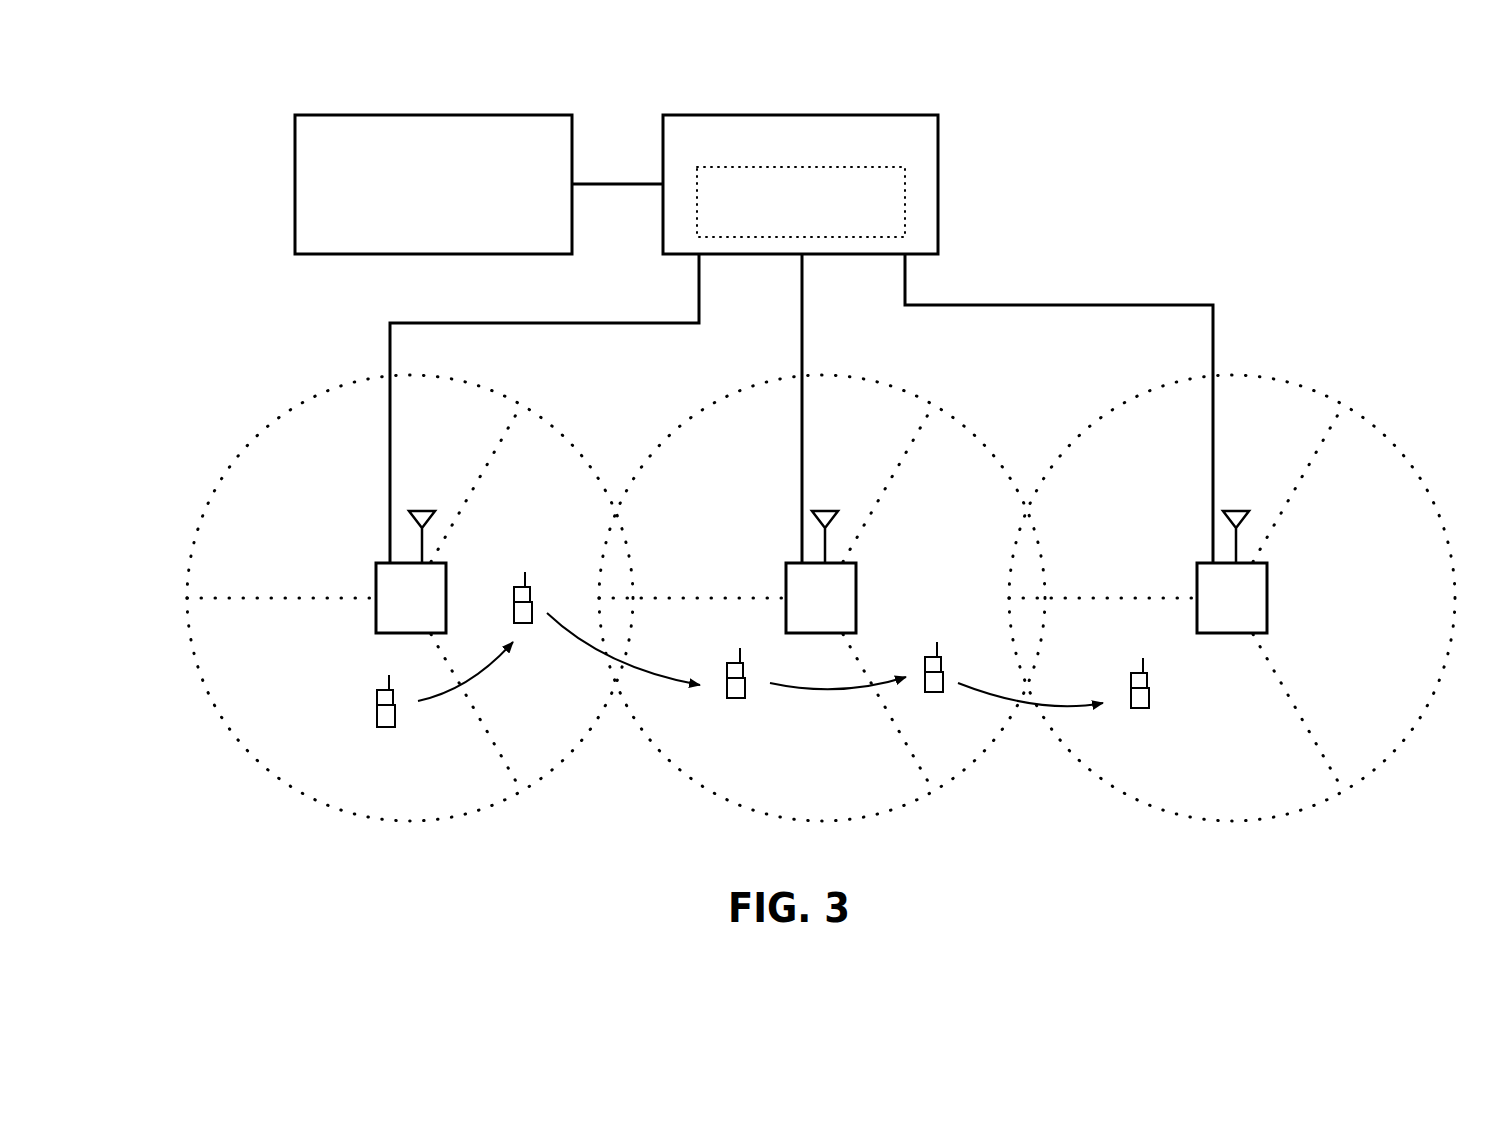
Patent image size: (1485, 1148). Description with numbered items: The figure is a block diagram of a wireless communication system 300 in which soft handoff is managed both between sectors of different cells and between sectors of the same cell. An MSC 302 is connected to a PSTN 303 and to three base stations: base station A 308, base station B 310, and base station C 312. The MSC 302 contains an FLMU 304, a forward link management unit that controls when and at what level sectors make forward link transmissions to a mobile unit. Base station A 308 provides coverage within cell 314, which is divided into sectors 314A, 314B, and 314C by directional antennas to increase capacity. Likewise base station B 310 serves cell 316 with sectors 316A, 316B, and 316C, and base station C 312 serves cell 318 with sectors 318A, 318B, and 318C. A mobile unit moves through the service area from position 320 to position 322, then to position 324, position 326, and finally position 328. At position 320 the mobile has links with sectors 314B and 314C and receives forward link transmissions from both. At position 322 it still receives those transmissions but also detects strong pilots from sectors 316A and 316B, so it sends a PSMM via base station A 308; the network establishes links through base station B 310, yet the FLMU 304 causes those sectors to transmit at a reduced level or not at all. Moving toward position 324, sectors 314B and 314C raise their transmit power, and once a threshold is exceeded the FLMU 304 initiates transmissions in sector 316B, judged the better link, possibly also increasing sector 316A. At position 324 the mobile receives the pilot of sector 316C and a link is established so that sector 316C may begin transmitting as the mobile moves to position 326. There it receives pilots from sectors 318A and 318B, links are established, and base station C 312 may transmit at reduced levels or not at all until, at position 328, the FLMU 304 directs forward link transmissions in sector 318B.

The wireless communication system 300 is at (1165, 183).
The MSC 302 is at (938, 133).
The PSTN 303 is at (572, 140).
The FLMU 304 is at (905, 208).
The base station A 308 is at (376, 580).
The base station B 310 is at (786, 580).
The base station C 312 is at (1197, 580).
The cell 314 is at (336, 389).
The sector 314A is at (338, 478).
The sector 314B is at (288, 680).
The sector 314C is at (572, 503).
The cell 316 is at (736, 390).
The sector 316A is at (752, 475).
The sector 316B is at (797, 767).
The sector 316C is at (983, 500).
The cell 318 is at (1160, 390).
The sector 318A is at (1164, 475).
The sector 318B is at (1207, 768).
The sector 318C is at (1393, 502).
The position 320 is at (385, 728).
The position 322 is at (513, 597).
The position 324 is at (735, 700).
The position 326 is at (943, 668).
The position 328 is at (1150, 693).